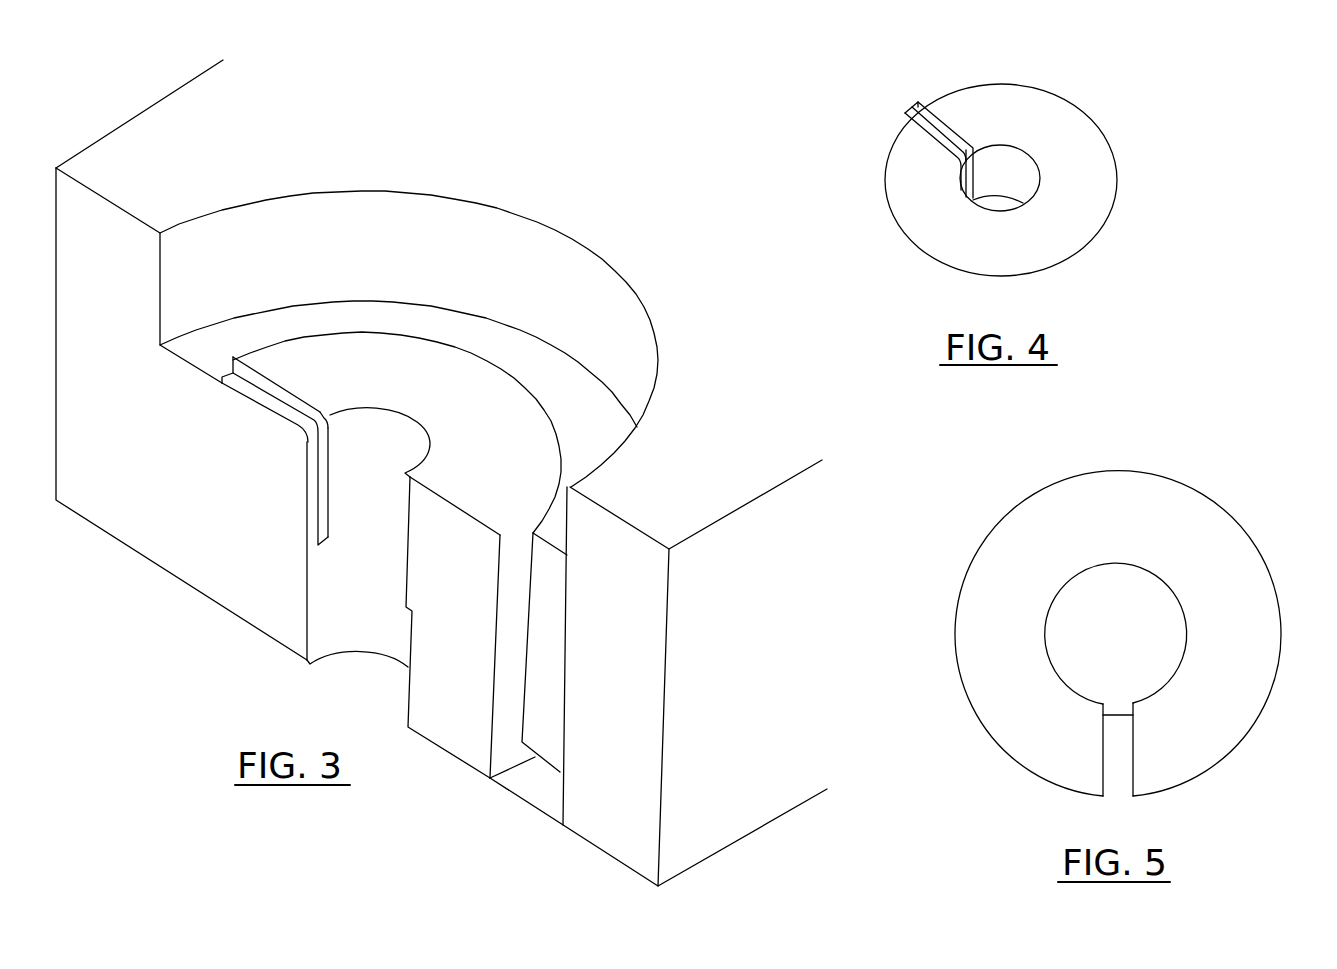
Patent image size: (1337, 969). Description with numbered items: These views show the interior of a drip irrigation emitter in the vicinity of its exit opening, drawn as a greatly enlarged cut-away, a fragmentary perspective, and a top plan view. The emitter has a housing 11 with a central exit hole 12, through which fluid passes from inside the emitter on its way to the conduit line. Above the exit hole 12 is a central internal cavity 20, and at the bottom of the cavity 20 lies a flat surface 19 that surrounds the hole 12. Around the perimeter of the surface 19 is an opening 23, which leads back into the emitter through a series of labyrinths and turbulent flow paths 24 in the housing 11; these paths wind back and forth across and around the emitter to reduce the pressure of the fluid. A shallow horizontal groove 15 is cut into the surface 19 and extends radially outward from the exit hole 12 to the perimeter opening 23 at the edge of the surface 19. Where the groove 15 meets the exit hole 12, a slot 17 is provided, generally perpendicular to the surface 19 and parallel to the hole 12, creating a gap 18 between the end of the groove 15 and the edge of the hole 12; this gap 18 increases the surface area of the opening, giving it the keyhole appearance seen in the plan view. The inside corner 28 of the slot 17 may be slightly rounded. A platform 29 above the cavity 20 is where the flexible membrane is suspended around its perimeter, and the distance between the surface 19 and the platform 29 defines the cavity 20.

In FIG. 3, the housing 11 is at (145, 505).
In FIG. 3, the exit hole 12 is at (362, 670).
In FIG. 4, the exit hole 12 is at (1000, 178).
In FIG. 5, the exit hole 12 is at (1117, 632).
In FIG. 3, the groove 15 is at (302, 402).
In FIG. 4, the groove 15 is at (947, 125).
In FIG. 3, the slot 17 is at (323, 463).
In FIG. 4, the slot 17 is at (962, 180).
In FIG. 5, the gap 18 is at (1117, 710).
In FIG. 3, the flat surface 19 is at (312, 358).
In FIG. 4, the flat surface 19 is at (1083, 173).
In FIG. 5, the flat surface 19 is at (1200, 525).
In FIG. 3, the central internal cavity 20 is at (357, 250).
In FIG. 3, the opening 23 is at (247, 335).
In FIG. 3, the labyrinths and turbulent flow paths 24 is at (543, 760).
In FIG. 3, the inside corner 28 is at (323, 413).
In FIG. 4, the inside corner 28 is at (970, 148).
In FIG. 3, the platform 29 is at (667, 485).